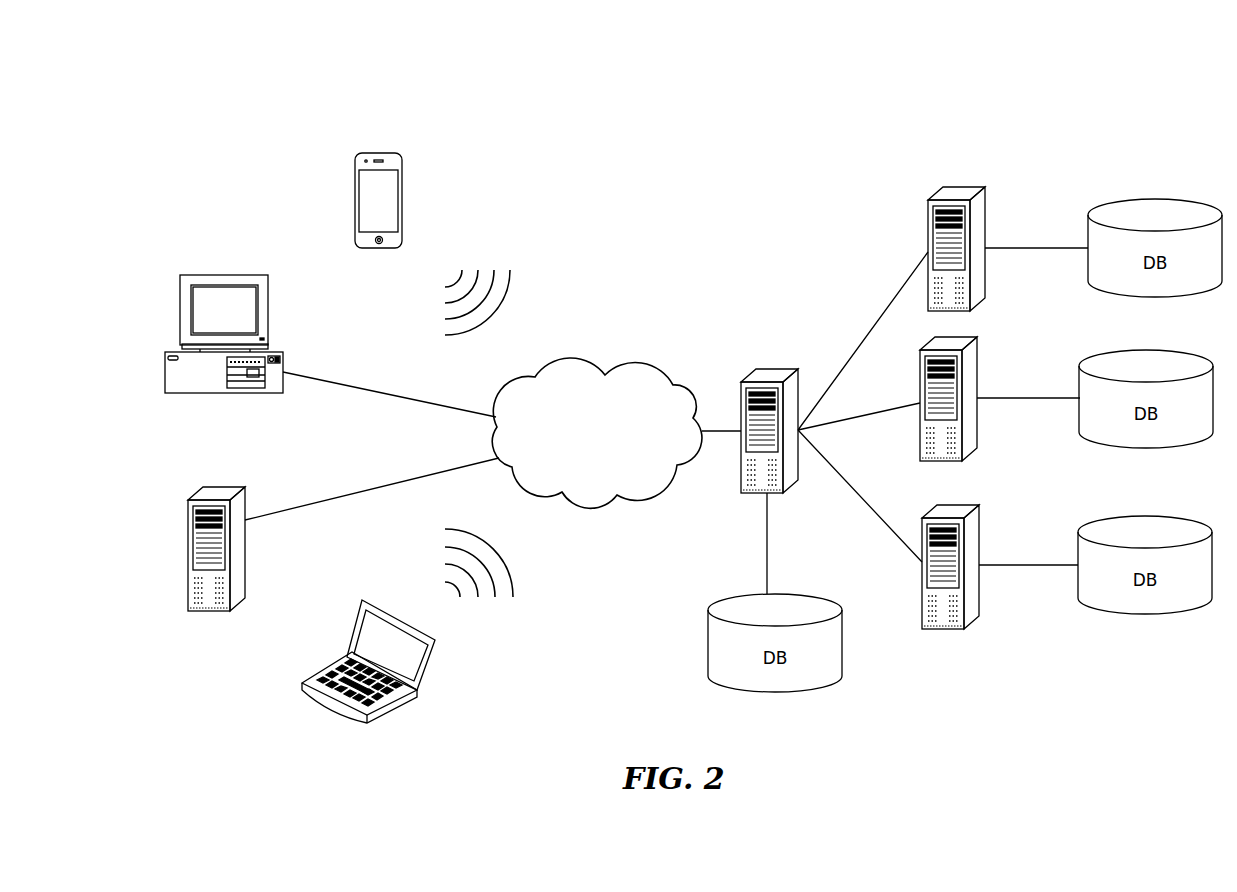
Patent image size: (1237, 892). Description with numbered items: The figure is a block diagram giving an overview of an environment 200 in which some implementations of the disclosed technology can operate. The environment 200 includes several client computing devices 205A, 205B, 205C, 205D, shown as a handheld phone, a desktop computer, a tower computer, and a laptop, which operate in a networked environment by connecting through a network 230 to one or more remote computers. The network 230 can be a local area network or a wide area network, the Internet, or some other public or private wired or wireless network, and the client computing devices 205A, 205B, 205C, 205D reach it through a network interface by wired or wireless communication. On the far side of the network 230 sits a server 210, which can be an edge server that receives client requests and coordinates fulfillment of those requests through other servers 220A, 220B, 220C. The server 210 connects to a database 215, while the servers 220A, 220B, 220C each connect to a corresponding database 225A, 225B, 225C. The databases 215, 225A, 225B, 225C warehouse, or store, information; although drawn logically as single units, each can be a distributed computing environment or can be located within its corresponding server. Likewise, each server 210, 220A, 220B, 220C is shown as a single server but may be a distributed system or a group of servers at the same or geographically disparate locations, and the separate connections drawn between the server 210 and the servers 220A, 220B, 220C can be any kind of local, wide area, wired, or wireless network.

The environment 200 is at (787, 172).
The client computing device 205A is at (403, 158).
The client computing device 205B is at (266, 275).
The client computing device 205C is at (235, 486).
The client computing device 205D is at (435, 645).
The server 210 is at (775, 370).
The database 215 is at (815, 601).
The server 220A is at (983, 190).
The server 220B is at (977, 340).
The server 220C is at (975, 508).
The database 225A is at (1150, 198).
The database 225B is at (1142, 349).
The database 225C is at (1140, 514).
The network 230 is at (648, 365).